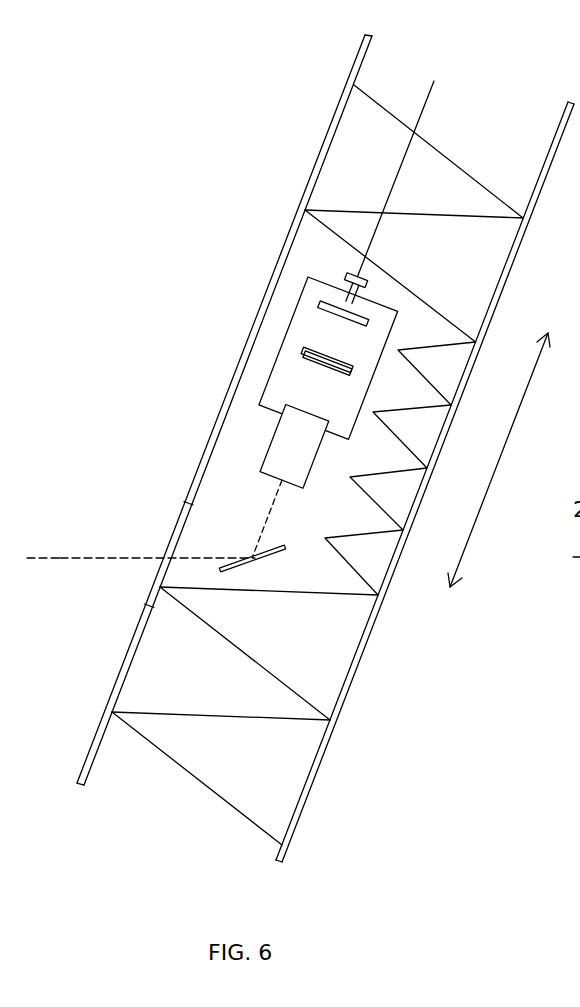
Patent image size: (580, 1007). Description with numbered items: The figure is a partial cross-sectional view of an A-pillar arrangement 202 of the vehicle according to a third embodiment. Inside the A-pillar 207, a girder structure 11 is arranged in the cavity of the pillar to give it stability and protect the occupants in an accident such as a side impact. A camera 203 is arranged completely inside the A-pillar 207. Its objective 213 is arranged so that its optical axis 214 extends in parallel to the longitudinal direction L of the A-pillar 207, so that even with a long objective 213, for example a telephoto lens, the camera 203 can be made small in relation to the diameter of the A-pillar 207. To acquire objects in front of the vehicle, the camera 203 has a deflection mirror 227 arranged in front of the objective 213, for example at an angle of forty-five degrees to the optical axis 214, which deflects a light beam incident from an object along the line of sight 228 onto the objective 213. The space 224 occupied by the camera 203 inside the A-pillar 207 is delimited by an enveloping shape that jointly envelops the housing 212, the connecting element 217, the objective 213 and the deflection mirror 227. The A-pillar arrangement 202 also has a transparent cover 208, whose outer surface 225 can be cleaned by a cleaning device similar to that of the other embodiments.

The A-pillar arrangement 202 is at (126, 50).
The A-pillar 207 is at (342, 99).
The transparent cover 208 is at (186, 512).
The girder structure 11 is at (457, 163).
The connecting element 217 is at (347, 283).
The housing 212 is at (310, 275).
The camera 203 is at (290, 327).
The space 224 is at (269, 377).
The objective 213 is at (273, 437).
The optical axis 214 is at (273, 504).
The outer surface 225 is at (165, 553).
The line of sight 228 is at (47, 558).
The deflection mirror 227 is at (276, 556).
The longitudinal direction L is at (492, 482).